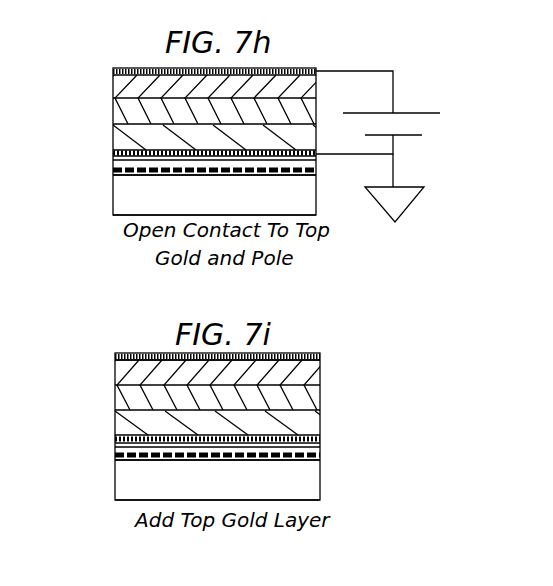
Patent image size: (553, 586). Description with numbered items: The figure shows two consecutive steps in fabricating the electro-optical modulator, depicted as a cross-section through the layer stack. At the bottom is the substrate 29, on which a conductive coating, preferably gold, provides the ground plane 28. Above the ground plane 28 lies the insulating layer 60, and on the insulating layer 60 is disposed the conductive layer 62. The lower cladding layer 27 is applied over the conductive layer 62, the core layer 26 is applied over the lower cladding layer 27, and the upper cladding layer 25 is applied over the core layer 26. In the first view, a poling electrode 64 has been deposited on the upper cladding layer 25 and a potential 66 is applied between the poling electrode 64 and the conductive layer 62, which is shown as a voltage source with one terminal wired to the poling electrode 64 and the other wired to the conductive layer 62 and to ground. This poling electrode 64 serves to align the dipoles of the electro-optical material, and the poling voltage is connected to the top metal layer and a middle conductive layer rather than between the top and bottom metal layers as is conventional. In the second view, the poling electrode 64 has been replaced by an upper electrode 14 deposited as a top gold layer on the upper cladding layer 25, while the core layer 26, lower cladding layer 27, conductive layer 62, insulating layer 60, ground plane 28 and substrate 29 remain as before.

In FIG. 7i, the upper electrode 14 is at (320, 353).
In FIG. 7h, the upper cladding layer 25 is at (113, 82).
In FIG. 7i, the upper cladding layer 25 is at (115, 372).
In FIG. 7h, the core layer 26 is at (113, 113).
In FIG. 7i, the core layer 26 is at (320, 395).
In FIG. 7h, the lower cladding layer 27 is at (113, 138).
In FIG. 7i, the lower cladding layer 27 is at (115, 422).
In FIG. 7h, the ground plane 28 is at (113, 172).
In FIG. 7i, the ground plane 28 is at (115, 457).
In FIG. 7h, the substrate 29 is at (116, 212).
In FIG. 7i, the substrate 29 is at (320, 483).
In FIG. 7h, the insulating layer 60 is at (113, 164).
In FIG. 7i, the insulating layer 60 is at (320, 448).
In FIG. 7h, the conductive layer 62 is at (113, 153).
In FIG. 7i, the conductive layer 62 is at (115, 437).
In FIG. 7h, the poling electrode 64 is at (302, 69).
In FIG. 7h, the potential 66 is at (425, 112).